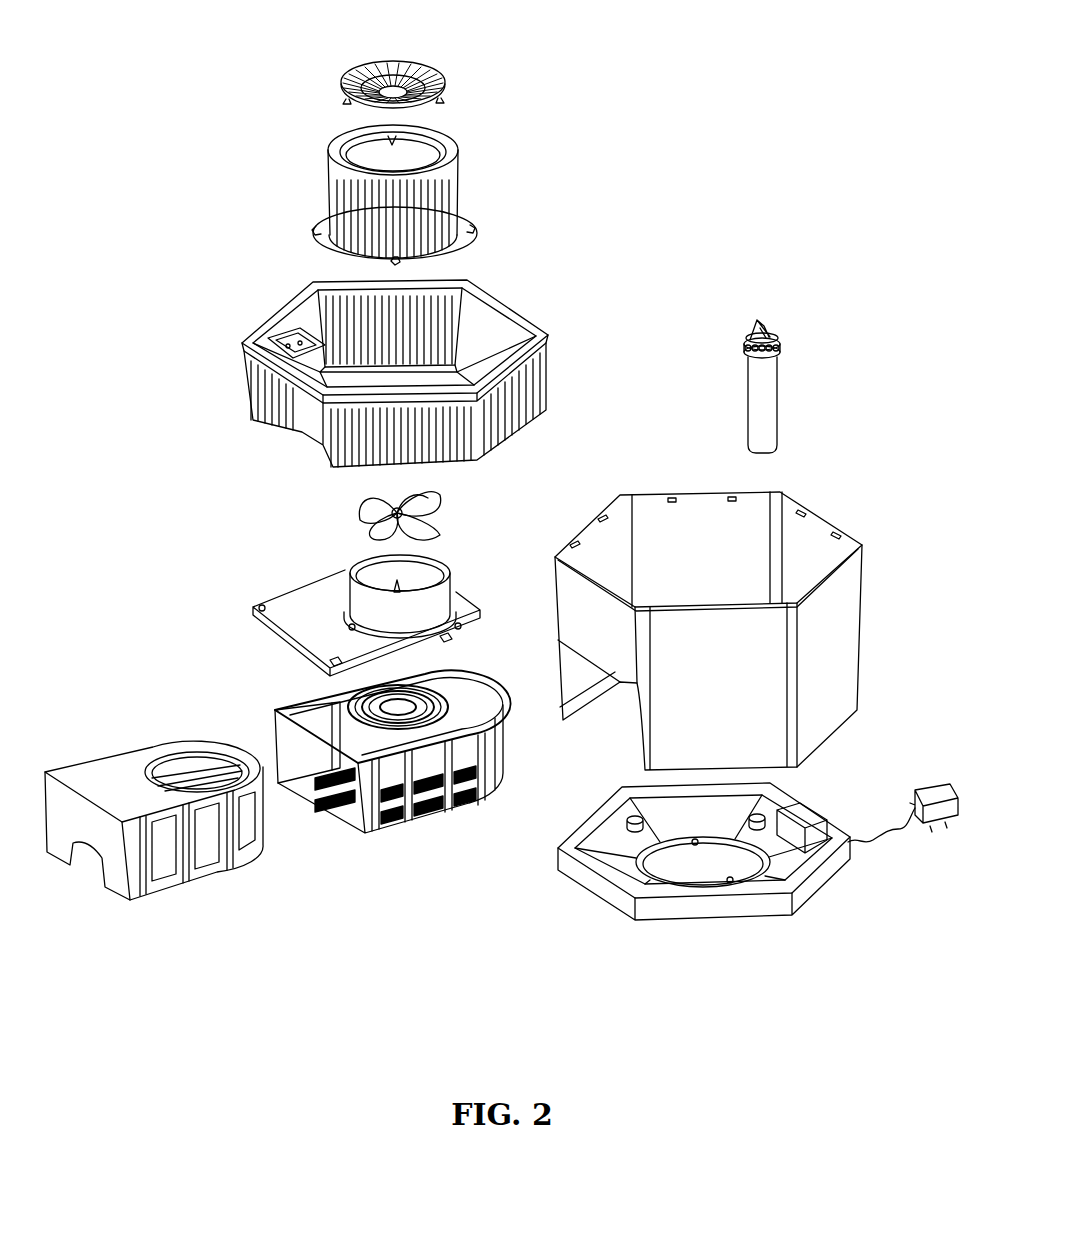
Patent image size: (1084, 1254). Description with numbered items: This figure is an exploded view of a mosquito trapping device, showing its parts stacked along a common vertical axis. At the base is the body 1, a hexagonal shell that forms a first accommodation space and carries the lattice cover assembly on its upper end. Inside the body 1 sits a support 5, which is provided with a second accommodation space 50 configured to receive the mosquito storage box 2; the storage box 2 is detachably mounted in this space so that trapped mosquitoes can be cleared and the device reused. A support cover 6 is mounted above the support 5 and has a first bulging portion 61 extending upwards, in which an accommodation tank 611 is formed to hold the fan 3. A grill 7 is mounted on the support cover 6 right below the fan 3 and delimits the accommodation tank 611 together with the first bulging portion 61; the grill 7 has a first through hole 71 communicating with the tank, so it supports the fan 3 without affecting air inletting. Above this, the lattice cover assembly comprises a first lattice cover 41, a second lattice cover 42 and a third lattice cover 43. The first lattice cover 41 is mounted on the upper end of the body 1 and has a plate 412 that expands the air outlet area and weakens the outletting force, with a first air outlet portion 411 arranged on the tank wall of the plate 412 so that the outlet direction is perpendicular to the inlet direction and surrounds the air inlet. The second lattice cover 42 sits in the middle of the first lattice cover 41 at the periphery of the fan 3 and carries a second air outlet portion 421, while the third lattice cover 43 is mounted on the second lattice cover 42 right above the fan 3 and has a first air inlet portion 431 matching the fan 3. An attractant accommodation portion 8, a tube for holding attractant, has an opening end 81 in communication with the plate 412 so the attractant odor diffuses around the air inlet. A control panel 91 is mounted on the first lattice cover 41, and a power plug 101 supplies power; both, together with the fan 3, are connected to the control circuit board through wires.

The body 1 is at (862, 620).
The mosquito storage box 2 is at (202, 847).
The fan 3 is at (362, 507).
The support 5 is at (373, 827).
The second accommodation space 50 is at (343, 740).
The support cover 6 is at (323, 607).
The first bulging portion 61 is at (357, 565).
The accommodation tank 611 is at (390, 568).
The grill 7 is at (340, 695).
The first through hole 71 is at (445, 703).
The attractant accommodation portion 8 is at (777, 390).
The opening end 81 is at (778, 328).
The control panel 91 is at (268, 350).
The first lattice cover 41 is at (303, 300).
The first air outlet portion 411 is at (455, 305).
The plate 412 is at (455, 370).
The second lattice cover 42 is at (335, 138).
The second air outlet portion 421 is at (462, 185).
The third lattice cover 43 is at (348, 74).
The first air inlet portion 431 is at (447, 90).
The power plug 101 is at (932, 823).